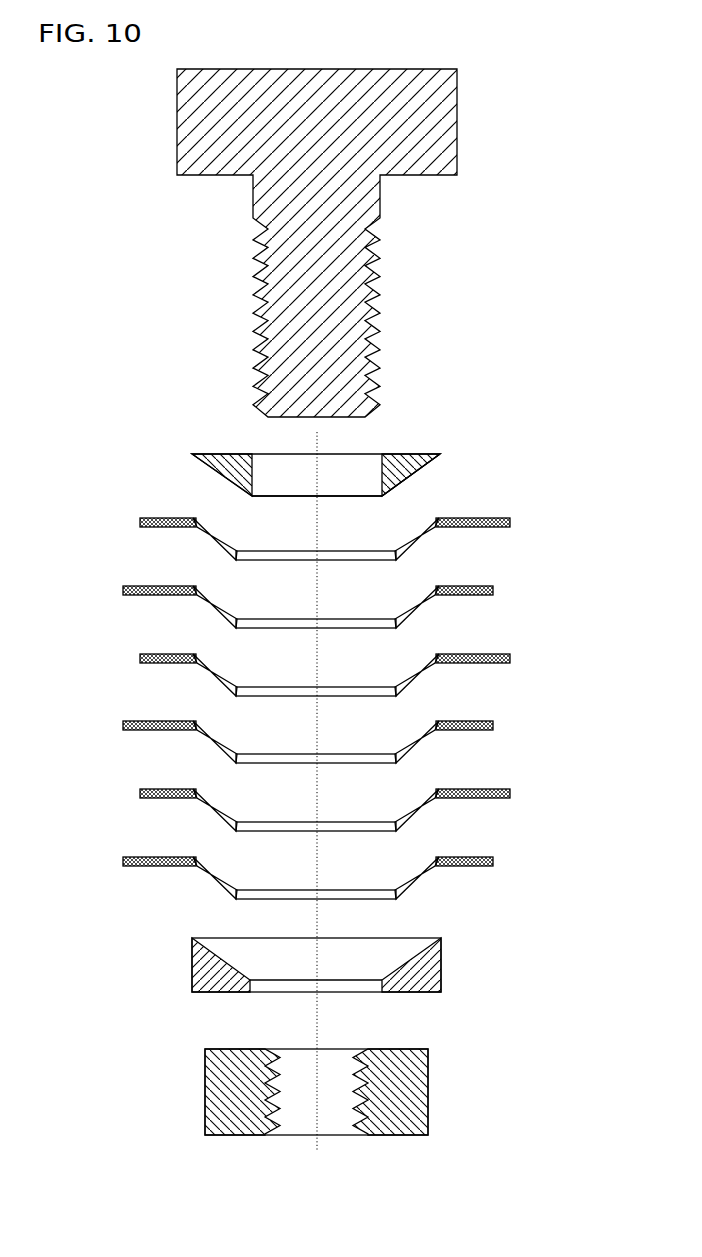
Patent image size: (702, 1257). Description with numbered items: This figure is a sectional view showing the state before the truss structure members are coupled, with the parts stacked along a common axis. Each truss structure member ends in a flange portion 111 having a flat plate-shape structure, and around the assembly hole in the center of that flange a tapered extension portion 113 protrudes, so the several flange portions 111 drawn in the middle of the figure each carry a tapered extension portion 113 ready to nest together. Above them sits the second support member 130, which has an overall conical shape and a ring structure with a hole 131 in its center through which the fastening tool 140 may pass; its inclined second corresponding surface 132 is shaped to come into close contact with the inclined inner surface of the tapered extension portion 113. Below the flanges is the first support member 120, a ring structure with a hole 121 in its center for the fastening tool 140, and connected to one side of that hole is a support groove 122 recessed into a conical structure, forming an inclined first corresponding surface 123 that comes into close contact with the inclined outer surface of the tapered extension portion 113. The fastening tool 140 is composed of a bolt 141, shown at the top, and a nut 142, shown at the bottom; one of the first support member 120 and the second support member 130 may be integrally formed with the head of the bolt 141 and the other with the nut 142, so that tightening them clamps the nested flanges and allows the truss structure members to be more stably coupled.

The fastening tool 140 is at (267, 604).
The bolt 141 is at (256, 255).
The nut 142 is at (205, 1100).
The second support member 130 is at (218, 465).
The hole 131 is at (368, 463).
The second corresponding surface 132 is at (430, 463).
The flange portion 111 is at (162, 528).
The tapered extension portion 113 is at (420, 540).
The first support member 120 is at (337, 973).
The hole 121 is at (363, 987).
The support groove 122 is at (400, 955).
The first corresponding surface 123 is at (223, 957).